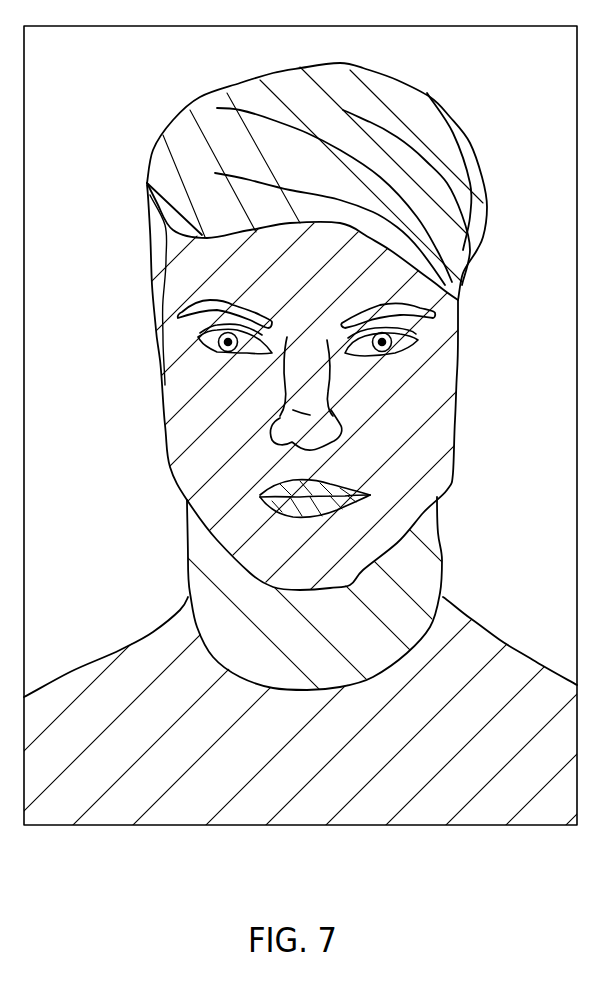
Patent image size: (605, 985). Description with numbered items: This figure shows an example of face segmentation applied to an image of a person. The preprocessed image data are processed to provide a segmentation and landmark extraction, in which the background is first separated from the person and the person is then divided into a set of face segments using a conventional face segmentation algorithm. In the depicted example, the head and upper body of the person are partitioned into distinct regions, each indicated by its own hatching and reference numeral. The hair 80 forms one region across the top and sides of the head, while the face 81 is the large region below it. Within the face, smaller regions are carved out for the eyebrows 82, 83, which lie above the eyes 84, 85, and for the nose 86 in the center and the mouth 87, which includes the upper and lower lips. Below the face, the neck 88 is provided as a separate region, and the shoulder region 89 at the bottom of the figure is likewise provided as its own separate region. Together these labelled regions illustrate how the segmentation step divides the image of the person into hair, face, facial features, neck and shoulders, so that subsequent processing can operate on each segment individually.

The hair 80 is at (397, 157).
The face 81 is at (372, 293).
The eyebrow 82 is at (190, 298).
The eyebrow 83 is at (425, 338).
The eye 84 is at (195, 343).
The eye 85 is at (458, 383).
The nose 86 is at (285, 402).
The mouth 87 is at (260, 495).
The neck 88 is at (385, 600).
The shoulder region 89 is at (500, 680).